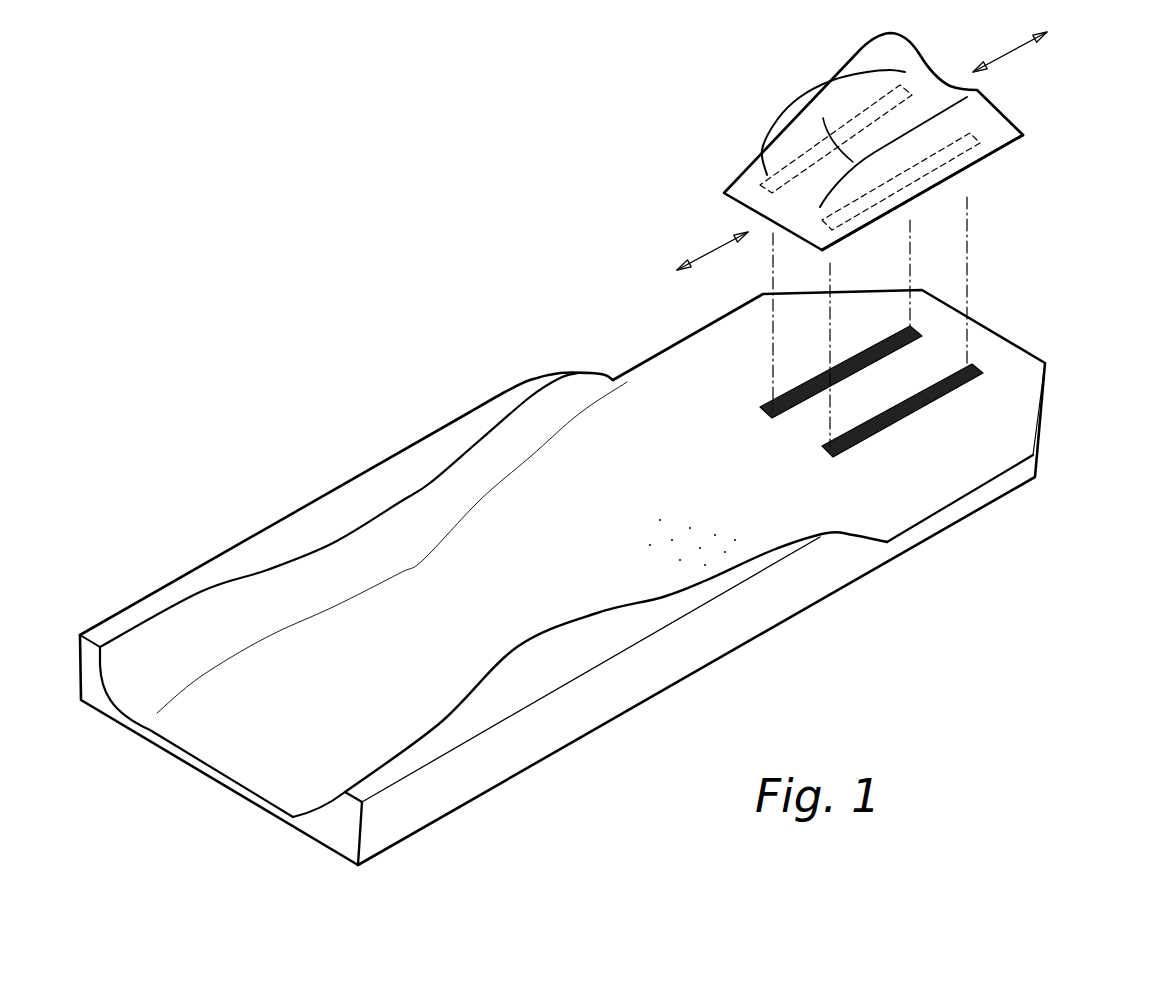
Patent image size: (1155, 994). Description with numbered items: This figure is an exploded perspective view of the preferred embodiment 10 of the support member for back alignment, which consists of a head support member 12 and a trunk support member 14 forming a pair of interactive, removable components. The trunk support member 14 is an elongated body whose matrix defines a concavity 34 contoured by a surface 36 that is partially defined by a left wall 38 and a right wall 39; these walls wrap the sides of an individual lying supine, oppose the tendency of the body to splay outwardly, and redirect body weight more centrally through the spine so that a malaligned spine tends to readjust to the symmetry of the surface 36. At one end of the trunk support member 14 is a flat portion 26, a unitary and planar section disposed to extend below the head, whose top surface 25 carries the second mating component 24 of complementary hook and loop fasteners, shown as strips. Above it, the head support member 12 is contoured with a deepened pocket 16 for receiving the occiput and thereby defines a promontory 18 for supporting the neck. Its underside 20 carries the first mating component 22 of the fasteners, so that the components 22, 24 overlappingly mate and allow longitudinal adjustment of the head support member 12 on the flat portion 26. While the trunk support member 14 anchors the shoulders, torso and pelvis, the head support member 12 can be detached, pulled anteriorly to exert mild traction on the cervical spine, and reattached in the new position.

The preferred embodiment 10 is at (462, 322).
The head support member 12 is at (1048, 95).
The trunk support member 14 is at (882, 590).
The deepened pocket 16 is at (846, 142).
The promontory 18 is at (825, 198).
The underside 20 is at (978, 172).
The first mating component 22 is at (920, 187).
The second mating component 24 is at (918, 408).
The top surface 25 is at (890, 397).
The flat portion 26 is at (745, 335).
The concavity 34 is at (664, 505).
The surface 36 is at (423, 648).
The left wall 38 is at (627, 620).
The right wall 39 is at (350, 503).